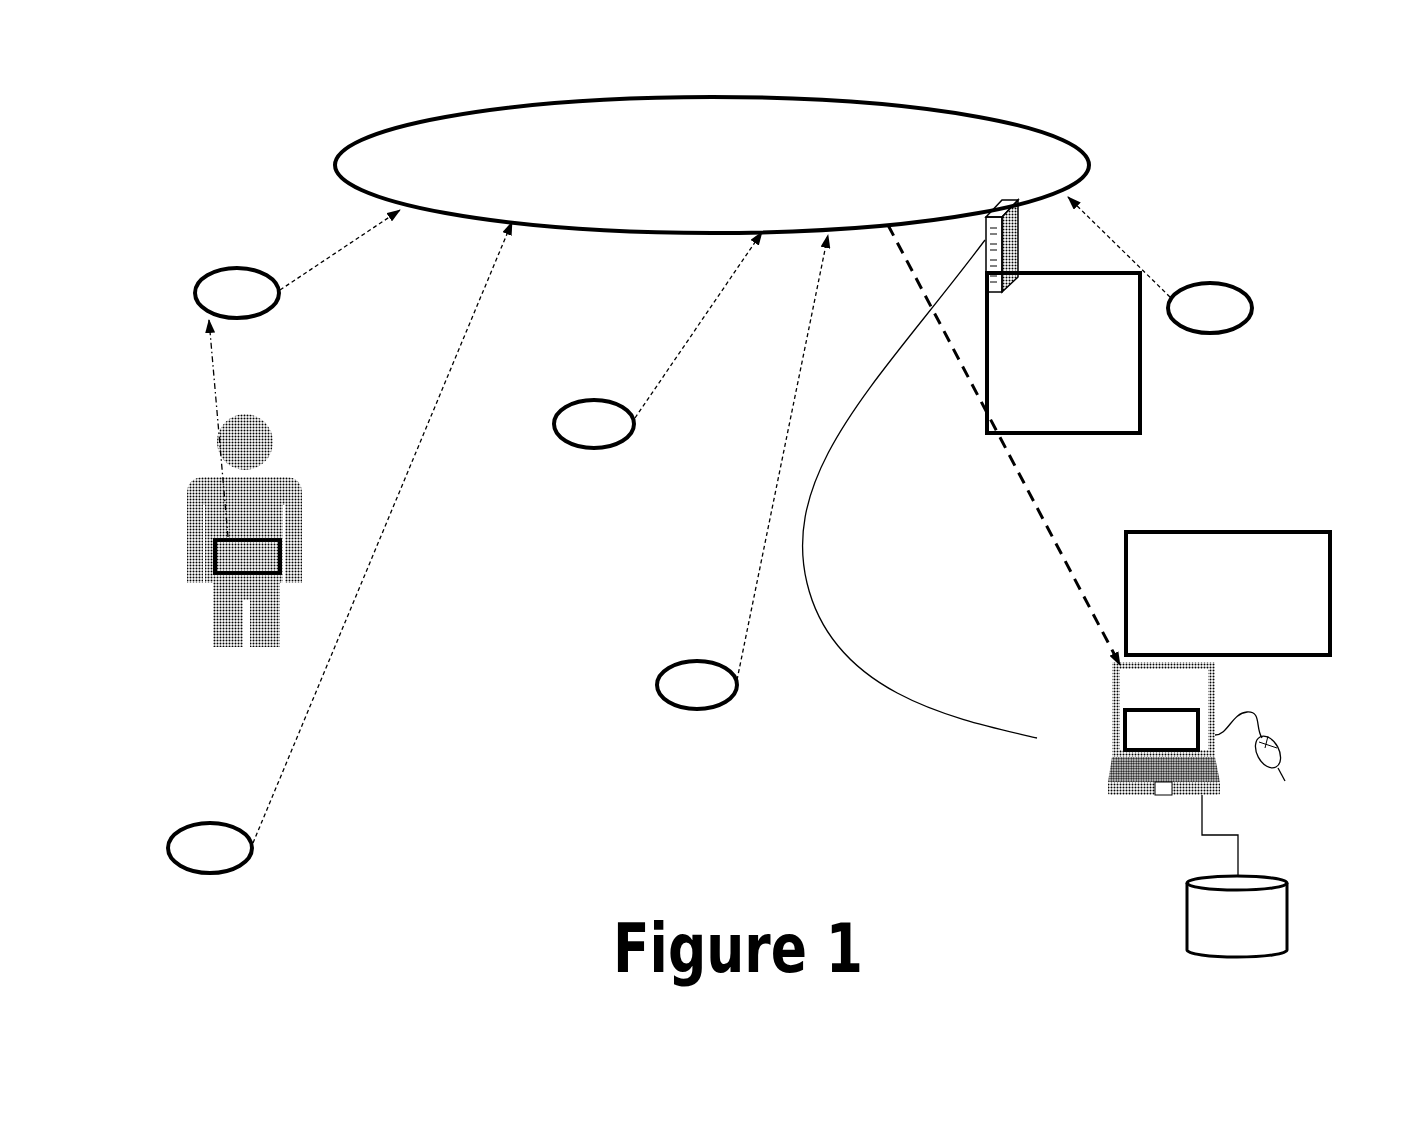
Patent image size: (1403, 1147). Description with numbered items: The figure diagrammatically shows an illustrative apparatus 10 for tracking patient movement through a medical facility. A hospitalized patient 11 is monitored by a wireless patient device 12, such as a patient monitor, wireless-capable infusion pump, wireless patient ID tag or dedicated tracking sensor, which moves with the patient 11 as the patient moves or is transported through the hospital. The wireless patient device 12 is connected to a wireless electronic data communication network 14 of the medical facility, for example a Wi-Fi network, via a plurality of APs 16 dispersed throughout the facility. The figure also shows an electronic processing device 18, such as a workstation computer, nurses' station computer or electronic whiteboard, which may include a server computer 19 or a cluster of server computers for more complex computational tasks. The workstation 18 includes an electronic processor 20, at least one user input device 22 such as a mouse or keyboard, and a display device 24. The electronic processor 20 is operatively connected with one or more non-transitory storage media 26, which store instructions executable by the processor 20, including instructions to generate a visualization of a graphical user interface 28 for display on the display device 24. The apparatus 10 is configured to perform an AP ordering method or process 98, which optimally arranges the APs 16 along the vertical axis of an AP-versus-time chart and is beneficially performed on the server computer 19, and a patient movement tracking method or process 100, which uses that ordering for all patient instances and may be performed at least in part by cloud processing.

The apparatus 10 is at (197, 131).
The patient 11 is at (268, 492).
The wireless patient device 12 is at (280, 548).
The wireless electronic data communication network 14 is at (978, 115).
The APs 16 is at (228, 268).
The electronic processing device 18 is at (977, 268).
The server computer 19 is at (1015, 240).
The electronic processor 20 is at (1115, 759).
The user input device 22 is at (1273, 756).
The display device 24 is at (1161, 689).
The non-transitory storage media 26 is at (1293, 882).
The graphical user interface 28 is at (1161, 730).
The AP ordering method or process 98 is at (1063, 353).
The patient movement tracking method or process 100 is at (1228, 593).